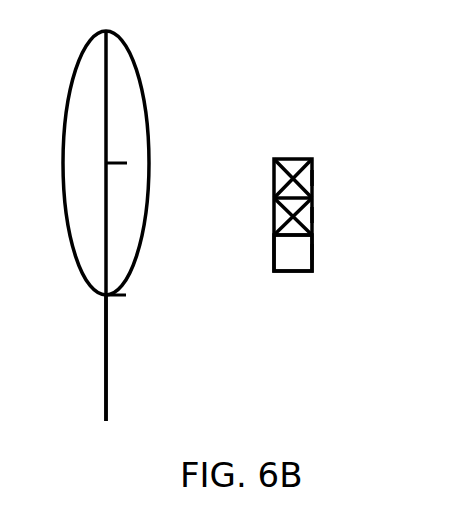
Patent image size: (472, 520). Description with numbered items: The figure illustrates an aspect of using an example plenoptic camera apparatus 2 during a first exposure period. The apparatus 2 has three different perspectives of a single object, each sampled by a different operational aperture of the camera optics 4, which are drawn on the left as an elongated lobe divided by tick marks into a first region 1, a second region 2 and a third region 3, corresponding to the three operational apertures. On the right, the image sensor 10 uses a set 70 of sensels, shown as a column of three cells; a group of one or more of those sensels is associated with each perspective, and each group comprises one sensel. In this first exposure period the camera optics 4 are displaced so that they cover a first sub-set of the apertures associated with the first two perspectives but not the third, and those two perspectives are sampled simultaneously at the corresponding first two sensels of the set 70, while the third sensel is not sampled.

The camera optics 4 is at (78, 63).
The first region 1 is at (120, 117).
The apparatus 2 is at (119, 247).
The third region 3 is at (119, 358).
The image sensor 10 is at (289, 147).
The set of sensels 70 is at (296, 283).